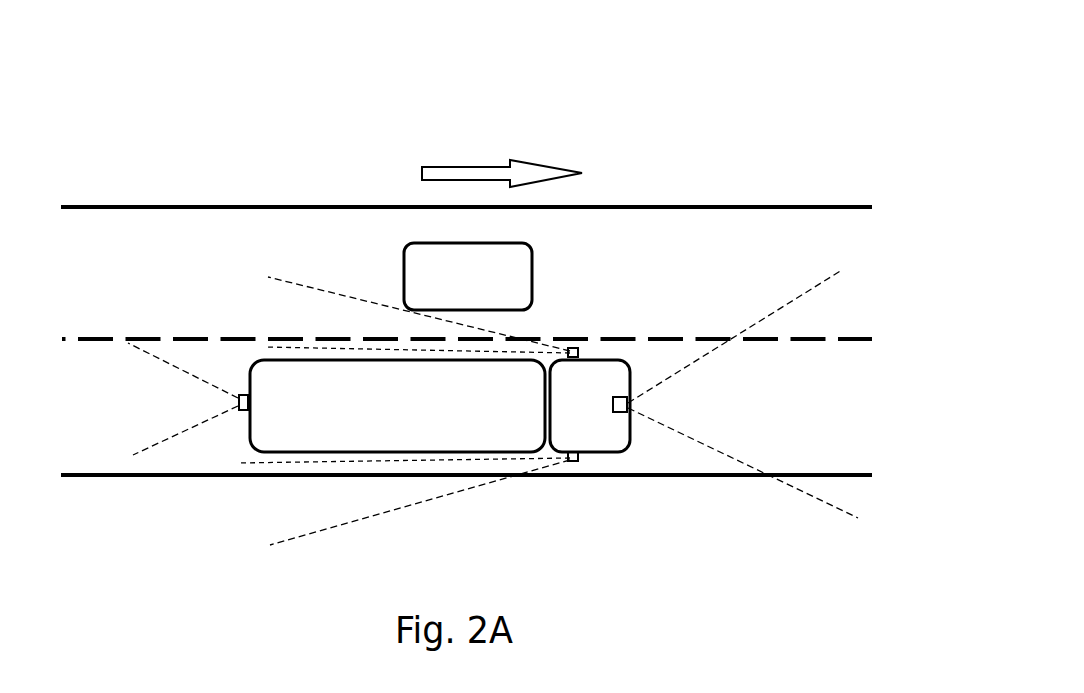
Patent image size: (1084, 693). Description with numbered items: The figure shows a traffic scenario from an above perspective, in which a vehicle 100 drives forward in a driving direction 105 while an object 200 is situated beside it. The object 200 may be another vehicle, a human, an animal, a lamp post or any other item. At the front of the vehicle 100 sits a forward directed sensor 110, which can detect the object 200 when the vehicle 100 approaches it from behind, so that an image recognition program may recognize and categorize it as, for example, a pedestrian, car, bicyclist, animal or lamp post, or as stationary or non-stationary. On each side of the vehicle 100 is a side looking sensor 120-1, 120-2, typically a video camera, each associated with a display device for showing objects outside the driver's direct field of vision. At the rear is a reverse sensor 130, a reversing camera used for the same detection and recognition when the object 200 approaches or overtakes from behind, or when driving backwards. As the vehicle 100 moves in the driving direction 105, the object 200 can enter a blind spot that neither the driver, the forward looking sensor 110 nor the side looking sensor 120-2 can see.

The vehicle 100 is at (448, 418).
The driving direction 105 is at (502, 155).
The forward directed sensor 110 is at (626, 397).
The side looking sensor 120-1 is at (577, 460).
The side looking sensor 120-2 is at (574, 348).
The reverse sensor 130 is at (238, 398).
The object 200 is at (488, 288).